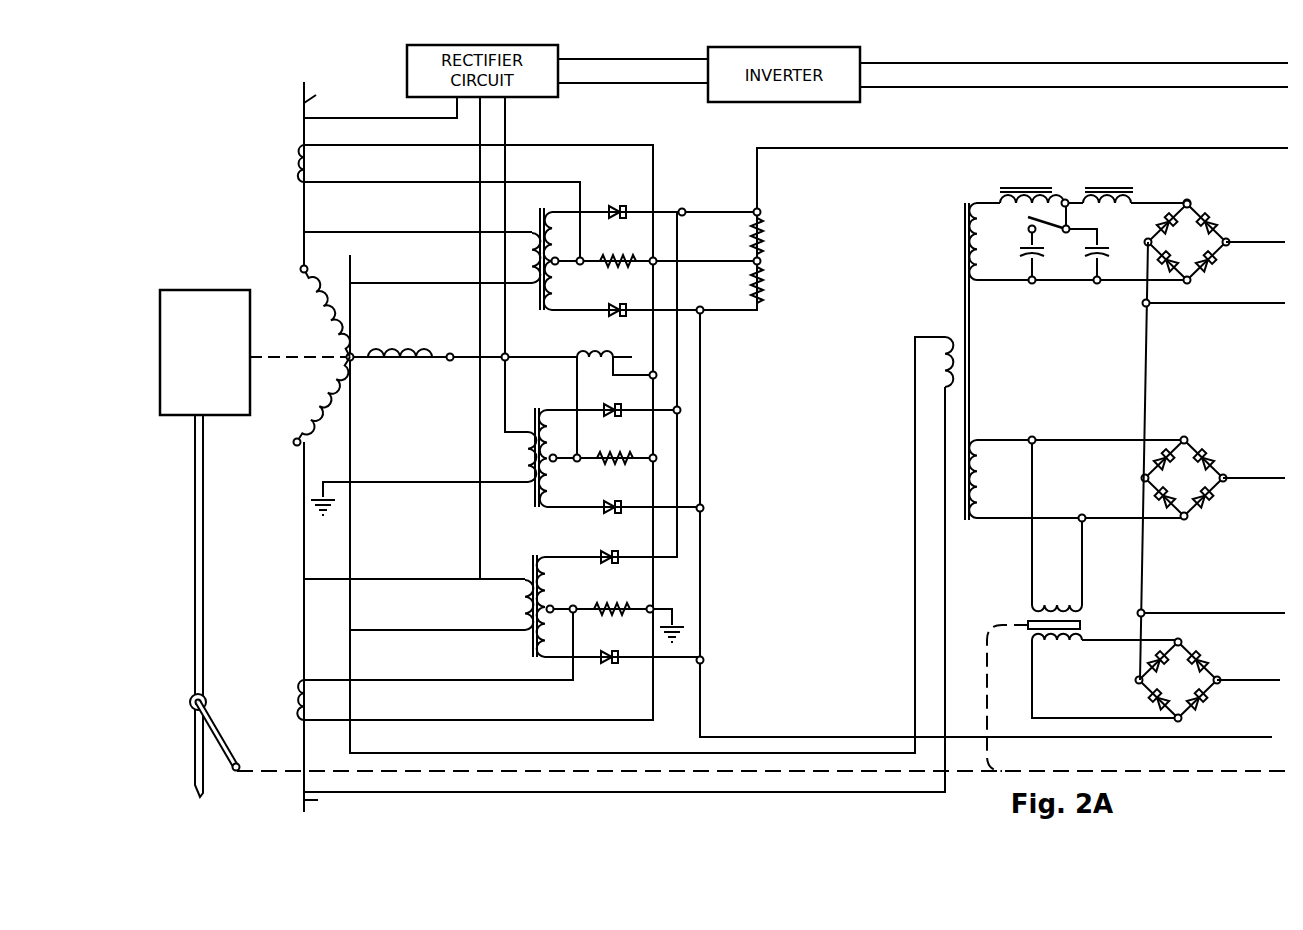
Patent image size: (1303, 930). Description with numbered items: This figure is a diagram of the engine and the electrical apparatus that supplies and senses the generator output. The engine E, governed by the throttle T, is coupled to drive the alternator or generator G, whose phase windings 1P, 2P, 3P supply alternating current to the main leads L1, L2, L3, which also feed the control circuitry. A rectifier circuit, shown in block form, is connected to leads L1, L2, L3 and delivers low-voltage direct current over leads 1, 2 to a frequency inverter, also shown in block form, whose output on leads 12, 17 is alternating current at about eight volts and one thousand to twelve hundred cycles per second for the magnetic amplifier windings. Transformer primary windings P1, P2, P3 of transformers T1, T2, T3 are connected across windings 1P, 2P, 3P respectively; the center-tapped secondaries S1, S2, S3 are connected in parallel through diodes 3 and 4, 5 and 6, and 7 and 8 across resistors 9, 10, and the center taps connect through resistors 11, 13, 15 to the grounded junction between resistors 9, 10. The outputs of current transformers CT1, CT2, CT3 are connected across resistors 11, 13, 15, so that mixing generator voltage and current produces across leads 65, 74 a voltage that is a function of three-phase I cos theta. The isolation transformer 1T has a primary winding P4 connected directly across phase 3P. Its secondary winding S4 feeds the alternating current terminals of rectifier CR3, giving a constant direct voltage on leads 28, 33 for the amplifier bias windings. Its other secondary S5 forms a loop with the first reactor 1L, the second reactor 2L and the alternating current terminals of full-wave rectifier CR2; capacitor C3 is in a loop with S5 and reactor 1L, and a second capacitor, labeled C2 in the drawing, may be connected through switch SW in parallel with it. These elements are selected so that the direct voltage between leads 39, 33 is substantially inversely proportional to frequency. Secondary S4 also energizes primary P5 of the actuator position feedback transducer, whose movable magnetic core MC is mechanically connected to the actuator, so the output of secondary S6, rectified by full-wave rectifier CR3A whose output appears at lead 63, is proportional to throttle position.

The main lead L1 is at (322, 100).
The main lead L2 is at (622, 357).
The main lead L3 is at (322, 801).
The current transformer CT1 is at (298, 166).
The current transformer CT2 is at (600, 348).
The current transformer CT3 is at (296, 700).
The engine E is at (195, 290).
The throttle T is at (215, 735).
The generator G is at (302, 342).
The generator phase winding 1P is at (310, 311).
The generator phase winding 2P is at (400, 343).
The generator phase winding 3P is at (326, 396).
The transformer T1 is at (536, 234).
The transformer primary winding P1 is at (526, 264).
The center-tapped secondary winding S1 is at (562, 284).
The transformer T2 is at (530, 432).
The transformer primary winding P2 is at (522, 458).
The center-tapped secondary winding S2 is at (550, 492).
The transformer T3 is at (528, 580).
The transformer primary winding P3 is at (518, 608).
The center-tapped secondary winding S3 is at (552, 592).
The diode 3 is at (612, 190).
The diode 4 is at (612, 288).
The diode 5 is at (608, 388).
The diode 6 is at (608, 486).
The diode 7 is at (604, 546).
The diode 8 is at (604, 646).
The resistor 9 is at (764, 238).
The resistor 10 is at (764, 292).
The resistor 11 is at (610, 250).
The resistor 13 is at (606, 446).
The resistor 15 is at (604, 598).
The lead 1 is at (668, 56).
The lead 2 is at (668, 90).
The lead 17 is at (1252, 66).
The lead 12 is at (1252, 91).
The lead 65 is at (1250, 152).
The first reactor 1L is at (1012, 186).
The second reactor 2L is at (1100, 186).
The switch SW is at (1026, 222).
The secondary winding S5 is at (985, 262).
The capacitor C2 is at (1048, 258).
The capacitor C3 is at (1112, 258).
The full-wave rectifier CR2 is at (1172, 251).
The rectifier CR3 is at (1169, 487).
The full-wave rectifier CR3A is at (1158, 689).
The lead 39 is at (1240, 242).
The negative conductor 33 is at (1240, 303).
The lead 28 is at (1236, 478).
The line 63 is at (1232, 680).
The lead 74 is at (1230, 737).
The primary winding P4 is at (942, 350).
The isolation transformer 1T is at (972, 370).
The secondary winding S4 is at (984, 486).
The primary winding P5 is at (1044, 608).
The movable magnetic core MC is at (1084, 624).
The secondary winding S6 is at (1044, 645).